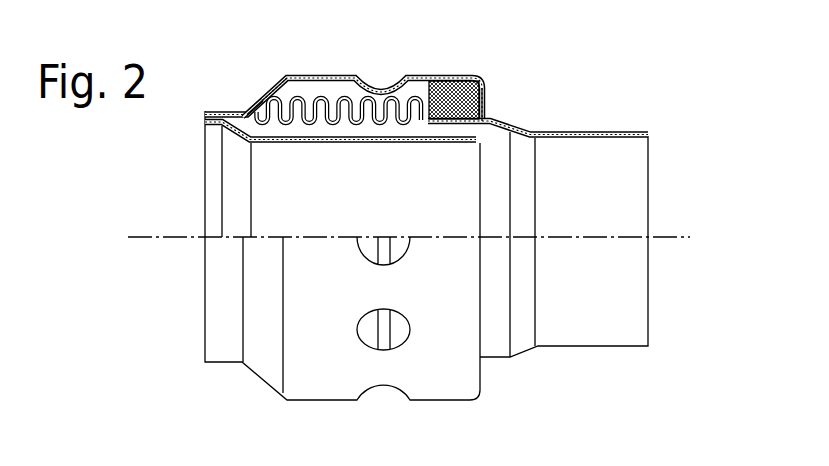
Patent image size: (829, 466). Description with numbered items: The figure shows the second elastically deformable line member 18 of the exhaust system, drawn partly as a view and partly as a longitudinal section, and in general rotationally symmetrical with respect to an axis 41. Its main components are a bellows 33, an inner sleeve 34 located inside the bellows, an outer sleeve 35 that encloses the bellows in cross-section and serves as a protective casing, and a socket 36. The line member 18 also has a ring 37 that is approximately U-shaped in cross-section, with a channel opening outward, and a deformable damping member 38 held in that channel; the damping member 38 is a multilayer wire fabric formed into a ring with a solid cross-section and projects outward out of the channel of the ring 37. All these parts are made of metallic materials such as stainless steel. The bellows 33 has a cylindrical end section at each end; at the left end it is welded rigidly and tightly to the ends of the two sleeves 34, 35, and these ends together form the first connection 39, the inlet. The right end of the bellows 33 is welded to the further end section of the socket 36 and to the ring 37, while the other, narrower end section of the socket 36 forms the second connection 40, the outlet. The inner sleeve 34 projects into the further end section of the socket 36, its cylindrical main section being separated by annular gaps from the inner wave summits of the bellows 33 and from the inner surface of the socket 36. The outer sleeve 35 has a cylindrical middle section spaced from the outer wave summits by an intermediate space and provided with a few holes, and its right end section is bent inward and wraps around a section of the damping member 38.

The second elastically deformable line member 18 is at (274, 74).
The bellows 33 is at (331, 77).
The inner sleeve 34 is at (285, 138).
The outer sleeve 35 is at (350, 77).
The socket 36 is at (570, 131).
The ring 37 is at (482, 106).
The damping member 38 is at (466, 77).
The first connection 39 is at (204, 363).
The second connection 40 is at (650, 348).
The axis 41 is at (150, 237).